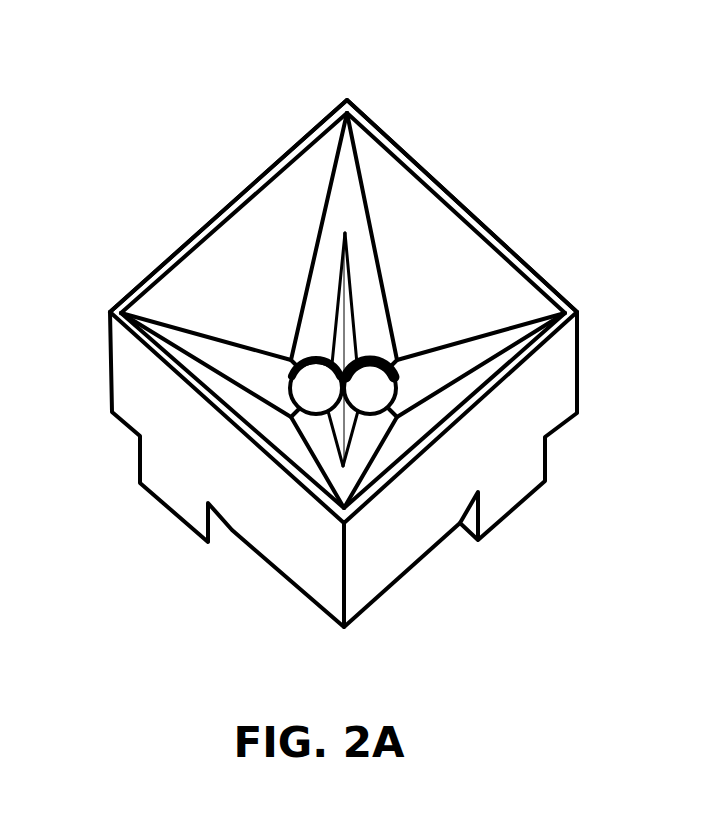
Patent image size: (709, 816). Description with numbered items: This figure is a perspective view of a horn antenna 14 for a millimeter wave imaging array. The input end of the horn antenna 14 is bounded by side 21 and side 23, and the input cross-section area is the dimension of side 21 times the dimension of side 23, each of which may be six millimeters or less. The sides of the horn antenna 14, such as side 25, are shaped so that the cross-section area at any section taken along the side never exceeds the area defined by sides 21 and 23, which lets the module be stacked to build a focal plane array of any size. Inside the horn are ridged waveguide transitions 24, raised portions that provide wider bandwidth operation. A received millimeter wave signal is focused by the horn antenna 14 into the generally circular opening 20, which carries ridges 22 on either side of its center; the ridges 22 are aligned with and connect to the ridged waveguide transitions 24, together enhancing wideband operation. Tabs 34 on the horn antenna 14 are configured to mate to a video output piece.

The horn antenna 14 is at (413, 107).
The opening 20 is at (370, 391).
The side 21 is at (277, 162).
The ridges 22 is at (320, 386).
The side 23 is at (433, 178).
The ridged waveguide transitions 24 is at (345, 327).
The side 25 is at (373, 543).
The tabs 34 is at (510, 497).